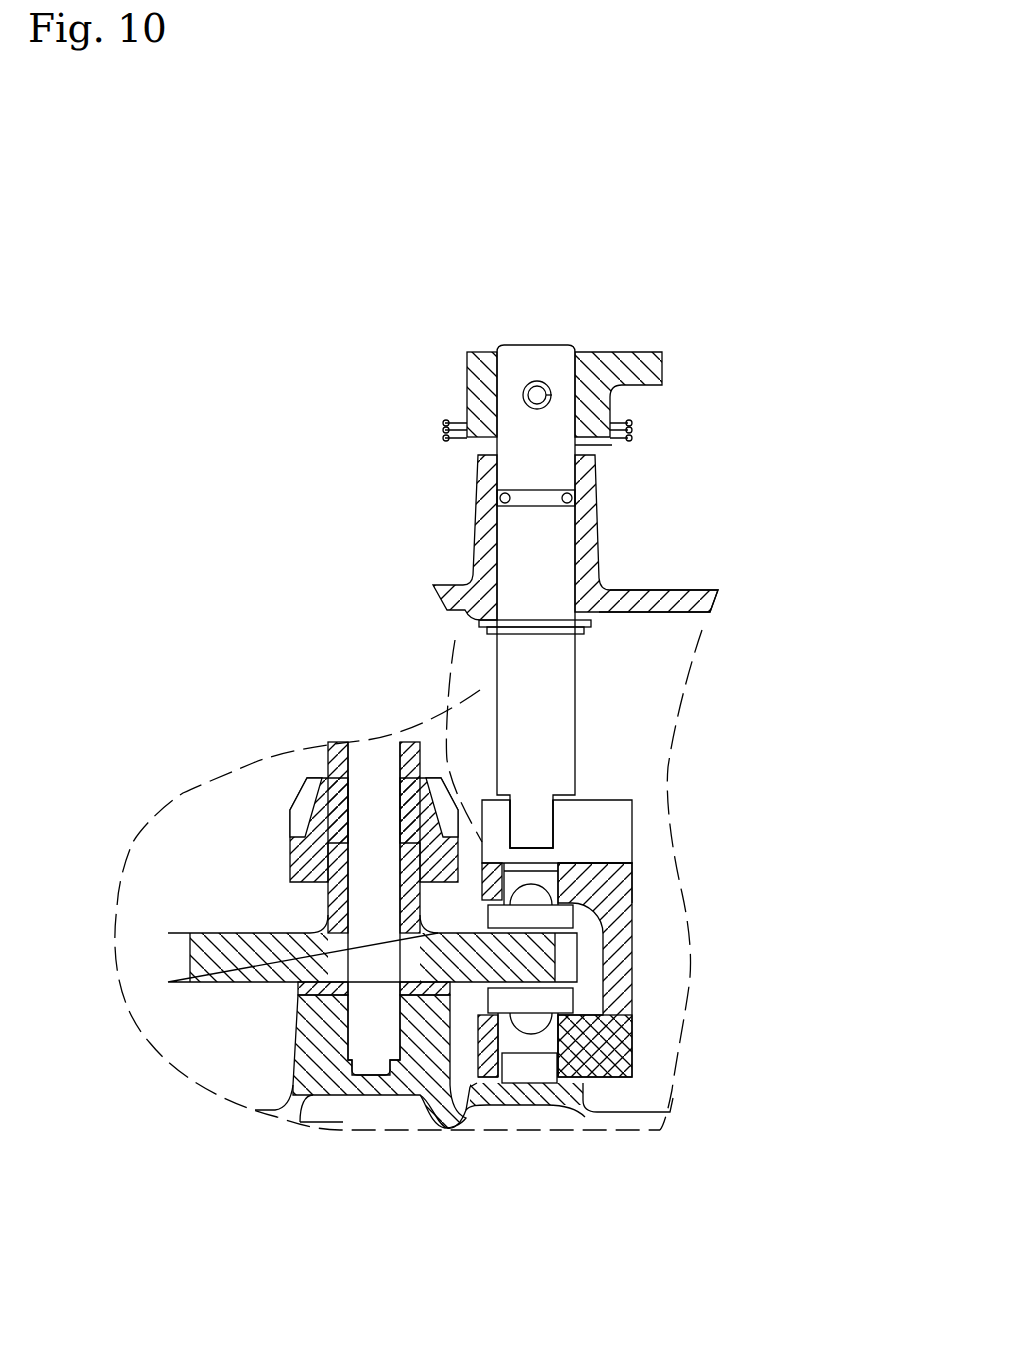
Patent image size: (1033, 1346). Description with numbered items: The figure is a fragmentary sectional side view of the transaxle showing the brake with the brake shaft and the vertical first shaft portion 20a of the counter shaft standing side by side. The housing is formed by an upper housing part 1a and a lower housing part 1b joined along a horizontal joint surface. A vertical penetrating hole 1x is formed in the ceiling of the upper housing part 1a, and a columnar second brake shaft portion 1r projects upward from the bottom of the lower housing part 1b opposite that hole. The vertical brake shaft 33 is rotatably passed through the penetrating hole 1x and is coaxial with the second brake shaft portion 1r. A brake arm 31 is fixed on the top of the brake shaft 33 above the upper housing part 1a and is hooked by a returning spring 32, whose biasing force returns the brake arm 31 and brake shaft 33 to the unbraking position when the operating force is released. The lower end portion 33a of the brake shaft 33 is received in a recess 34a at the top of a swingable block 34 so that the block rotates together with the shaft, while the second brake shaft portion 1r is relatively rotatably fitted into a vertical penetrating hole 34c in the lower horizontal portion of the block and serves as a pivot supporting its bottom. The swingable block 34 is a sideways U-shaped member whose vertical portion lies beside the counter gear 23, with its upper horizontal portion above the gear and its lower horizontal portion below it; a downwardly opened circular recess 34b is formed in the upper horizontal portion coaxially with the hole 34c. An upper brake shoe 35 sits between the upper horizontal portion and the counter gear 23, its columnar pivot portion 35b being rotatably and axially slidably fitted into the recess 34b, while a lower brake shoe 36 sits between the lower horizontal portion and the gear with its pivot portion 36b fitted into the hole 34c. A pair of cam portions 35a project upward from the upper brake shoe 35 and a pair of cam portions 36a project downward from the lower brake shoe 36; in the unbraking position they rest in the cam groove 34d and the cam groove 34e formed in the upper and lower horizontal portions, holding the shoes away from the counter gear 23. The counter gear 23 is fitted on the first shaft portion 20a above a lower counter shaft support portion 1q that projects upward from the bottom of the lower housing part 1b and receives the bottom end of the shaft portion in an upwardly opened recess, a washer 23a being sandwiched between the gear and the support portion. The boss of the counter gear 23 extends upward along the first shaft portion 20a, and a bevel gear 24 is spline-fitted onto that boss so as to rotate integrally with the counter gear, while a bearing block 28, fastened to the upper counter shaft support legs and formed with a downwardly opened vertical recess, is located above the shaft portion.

The brake arm 31 is at (620, 357).
The returning spring 32 is at (643, 430).
The vertical penetrating hole 1x is at (475, 492).
The bevel gear 24 is at (300, 817).
The upper housing part 1a is at (678, 592).
The brake shaft 33 is at (557, 668).
The shaft tip 33a is at (522, 824).
The swingable block 34 is at (632, 957).
The recess 34a is at (632, 798).
The vertical circular recess 34b is at (562, 866).
The vertical penetrating hole 34c is at (480, 1037).
The cam groove 34d is at (485, 830).
The cam groove 34e is at (482, 1085).
The upper brake shoe 35 is at (558, 915).
The cam portions 35a is at (533, 897).
The columnar pivot portion 35b is at (540, 880).
The lower brake shoe 36 is at (552, 1003).
The cam portions 36a is at (558, 1037).
The columnar pivot portion 36b is at (498, 1050).
The bearing block 28 is at (342, 756).
The first shaft portion 20a is at (378, 770).
The counter gear 23 is at (225, 934).
The washer 23a is at (296, 990).
The lower counter shaft support portion 1q is at (292, 1060).
The second brake shaft portion 1r is at (528, 1072).
The lower housing part 1b is at (623, 1120).